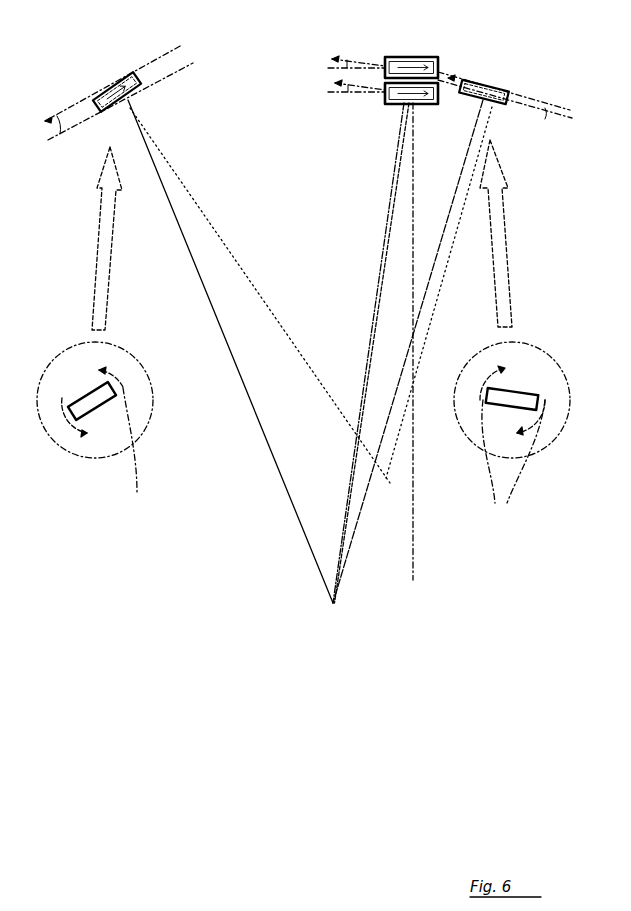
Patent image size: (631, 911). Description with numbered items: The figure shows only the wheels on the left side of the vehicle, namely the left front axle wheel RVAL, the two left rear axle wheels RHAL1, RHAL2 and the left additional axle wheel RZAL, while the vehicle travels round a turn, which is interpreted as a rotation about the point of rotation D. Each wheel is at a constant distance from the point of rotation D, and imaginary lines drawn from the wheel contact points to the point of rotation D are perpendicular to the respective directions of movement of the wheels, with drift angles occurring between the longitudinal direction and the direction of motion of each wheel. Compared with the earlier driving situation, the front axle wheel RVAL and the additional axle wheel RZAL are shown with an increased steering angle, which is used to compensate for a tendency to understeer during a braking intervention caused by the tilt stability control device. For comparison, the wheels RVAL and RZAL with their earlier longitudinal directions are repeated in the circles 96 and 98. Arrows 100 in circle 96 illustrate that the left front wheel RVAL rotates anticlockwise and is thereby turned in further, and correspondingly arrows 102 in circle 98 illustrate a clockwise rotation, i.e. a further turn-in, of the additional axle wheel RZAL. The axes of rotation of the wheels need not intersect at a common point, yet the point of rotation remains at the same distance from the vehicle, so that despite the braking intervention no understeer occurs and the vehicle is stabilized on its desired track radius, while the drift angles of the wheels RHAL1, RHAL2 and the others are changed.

The circle 96 is at (133, 440).
The circle 98 is at (463, 433).
The arrows 100 is at (75, 422).
The arrows 102 is at (513, 457).
The point of rotation D is at (332, 605).
The left front axle wheel RVAL is at (118, 80).
The left rear axle wheel RHAL1 is at (405, 105).
The left rear axle wheel RHAL2 is at (408, 57).
The left additional axle wheel RZAL is at (499, 106).